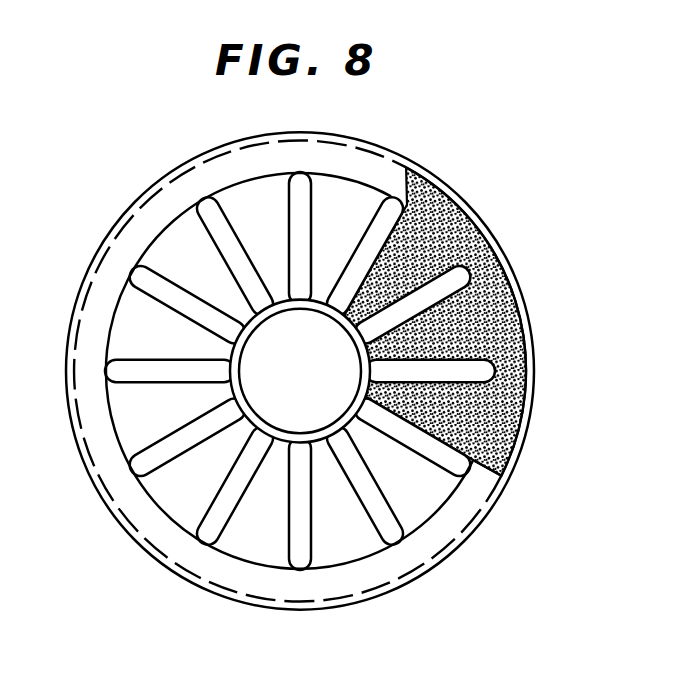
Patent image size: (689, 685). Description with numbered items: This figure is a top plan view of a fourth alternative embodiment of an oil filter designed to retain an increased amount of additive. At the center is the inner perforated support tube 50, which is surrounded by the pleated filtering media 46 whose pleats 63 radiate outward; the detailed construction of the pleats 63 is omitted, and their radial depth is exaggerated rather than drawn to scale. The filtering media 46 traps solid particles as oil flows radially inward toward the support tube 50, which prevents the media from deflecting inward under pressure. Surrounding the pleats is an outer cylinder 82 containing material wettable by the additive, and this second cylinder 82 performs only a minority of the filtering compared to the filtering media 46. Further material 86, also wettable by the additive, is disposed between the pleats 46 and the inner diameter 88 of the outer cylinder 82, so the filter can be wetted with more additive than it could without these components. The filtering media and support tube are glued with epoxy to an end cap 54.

The pleated filtering media 46 is at (176, 277).
The inner perforated support tube 50 is at (243, 374).
The end cap 54 is at (102, 493).
The pleats 63 is at (433, 472).
The outer cylinder 82 is at (524, 353).
The material 86 is at (465, 318).
The inner diameter 88 is at (517, 449).